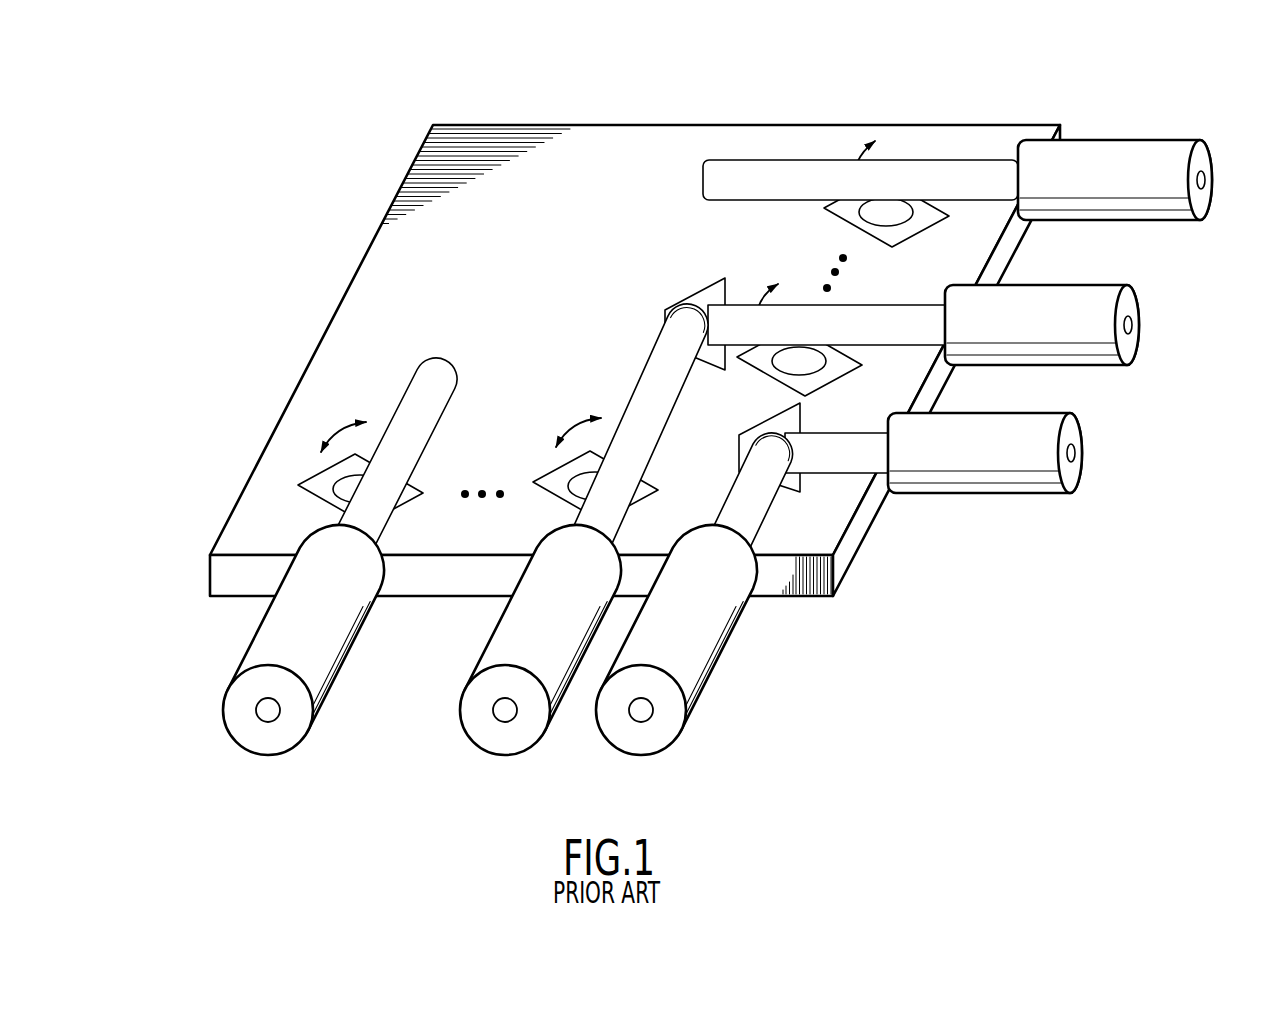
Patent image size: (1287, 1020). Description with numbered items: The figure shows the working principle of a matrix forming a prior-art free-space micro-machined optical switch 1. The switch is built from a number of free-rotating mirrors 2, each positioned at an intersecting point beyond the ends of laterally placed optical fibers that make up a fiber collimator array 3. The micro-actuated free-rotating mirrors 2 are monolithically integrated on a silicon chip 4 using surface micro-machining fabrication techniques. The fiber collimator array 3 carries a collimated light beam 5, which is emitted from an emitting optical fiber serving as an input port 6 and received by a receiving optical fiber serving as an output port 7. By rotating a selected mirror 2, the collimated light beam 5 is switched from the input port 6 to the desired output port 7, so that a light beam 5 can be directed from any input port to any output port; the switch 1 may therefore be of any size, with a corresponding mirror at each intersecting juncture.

The free-space micro-machined optical switch 1 is at (950, 104).
The free-rotating mirror 2 is at (908, 237).
The fiber collimator array 3 is at (663, 667).
The silicon chip 4 is at (848, 558).
The collimated light beam 5 is at (702, 178).
The emitting optical fiber (input port) 6 is at (286, 738).
The receiving optical fiber (output port) 7 is at (1205, 200).